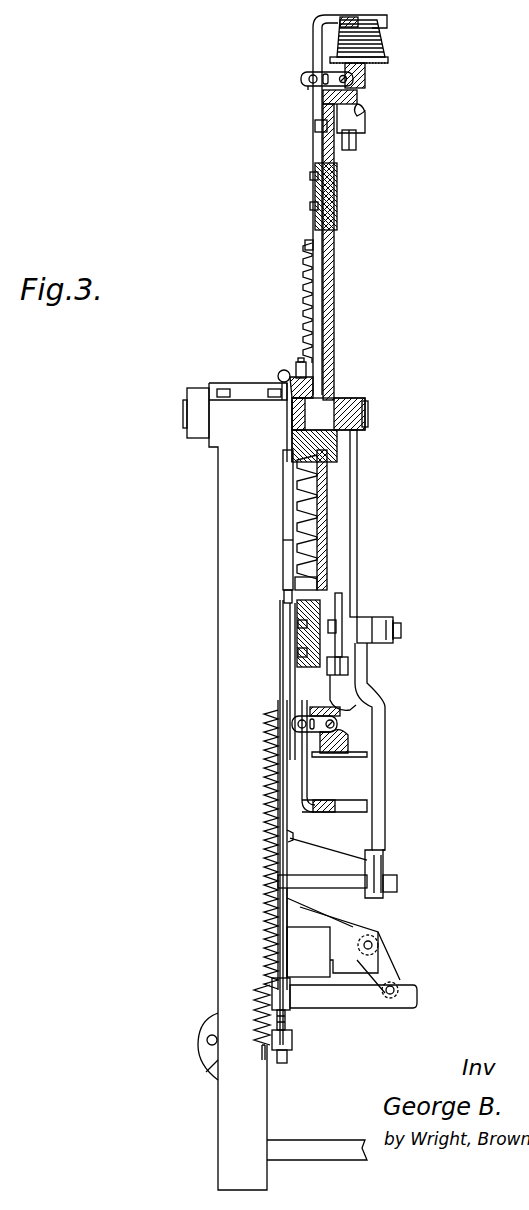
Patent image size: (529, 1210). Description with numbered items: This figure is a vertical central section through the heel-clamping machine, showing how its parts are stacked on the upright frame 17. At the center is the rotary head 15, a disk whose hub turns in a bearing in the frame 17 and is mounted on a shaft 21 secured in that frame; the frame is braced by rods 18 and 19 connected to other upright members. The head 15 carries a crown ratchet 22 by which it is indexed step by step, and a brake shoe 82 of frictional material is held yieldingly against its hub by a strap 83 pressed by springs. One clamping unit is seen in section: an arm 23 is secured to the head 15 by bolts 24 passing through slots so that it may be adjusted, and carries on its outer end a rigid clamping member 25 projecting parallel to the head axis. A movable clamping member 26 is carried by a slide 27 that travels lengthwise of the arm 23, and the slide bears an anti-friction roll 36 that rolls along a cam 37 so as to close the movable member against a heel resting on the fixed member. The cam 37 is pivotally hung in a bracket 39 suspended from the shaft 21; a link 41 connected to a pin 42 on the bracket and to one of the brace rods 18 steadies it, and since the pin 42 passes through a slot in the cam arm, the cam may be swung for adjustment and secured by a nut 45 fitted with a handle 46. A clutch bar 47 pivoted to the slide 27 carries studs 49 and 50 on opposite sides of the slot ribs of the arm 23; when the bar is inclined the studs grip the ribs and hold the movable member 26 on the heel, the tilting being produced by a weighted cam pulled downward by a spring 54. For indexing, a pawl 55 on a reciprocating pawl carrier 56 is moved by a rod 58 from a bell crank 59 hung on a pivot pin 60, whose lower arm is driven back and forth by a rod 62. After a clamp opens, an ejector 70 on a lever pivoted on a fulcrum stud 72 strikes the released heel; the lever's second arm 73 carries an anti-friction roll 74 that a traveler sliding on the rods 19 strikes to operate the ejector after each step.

The rotary head 15 is at (335, 226).
The upright frame 17 is at (225, 548).
The brace rod 18 is at (397, 882).
The brace rod 19 is at (417, 1000).
The shaft 21 is at (185, 410).
The crown ratchet 22 is at (305, 280).
The arm 23 is at (308, 781).
The bolt 24 is at (310, 206).
The rigid clamping member 25 is at (385, 18).
The movable clamping member 26 is at (368, 757).
The slide 27 is at (360, 116).
The anti-friction roll 36 is at (356, 150).
The cam 37 is at (342, 625).
The bracket 39 is at (357, 515).
The link 41 is at (385, 827).
The pin 42 is at (401, 632).
The nut 45 is at (392, 620).
The handle 46 is at (401, 625).
The clutch bar 47 is at (305, 74).
The stud 49 is at (313, 90).
The stud 50 is at (303, 84).
The spring 54 is at (266, 978).
The pawl 55 is at (280, 378).
The pawl carrier 56 is at (285, 568).
The rod 58 is at (280, 645).
The bell crank 59 is at (292, 1040).
The pivot pin 60 is at (212, 1040).
The rod 62 is at (284, 1148).
The ejector 70 is at (290, 838).
The fulcrum stud 72 is at (380, 945).
The second arm 73 is at (393, 975).
The anti-friction roll 74 is at (398, 990).
The brake shoe 82 is at (282, 370).
The strap 83 is at (306, 370).